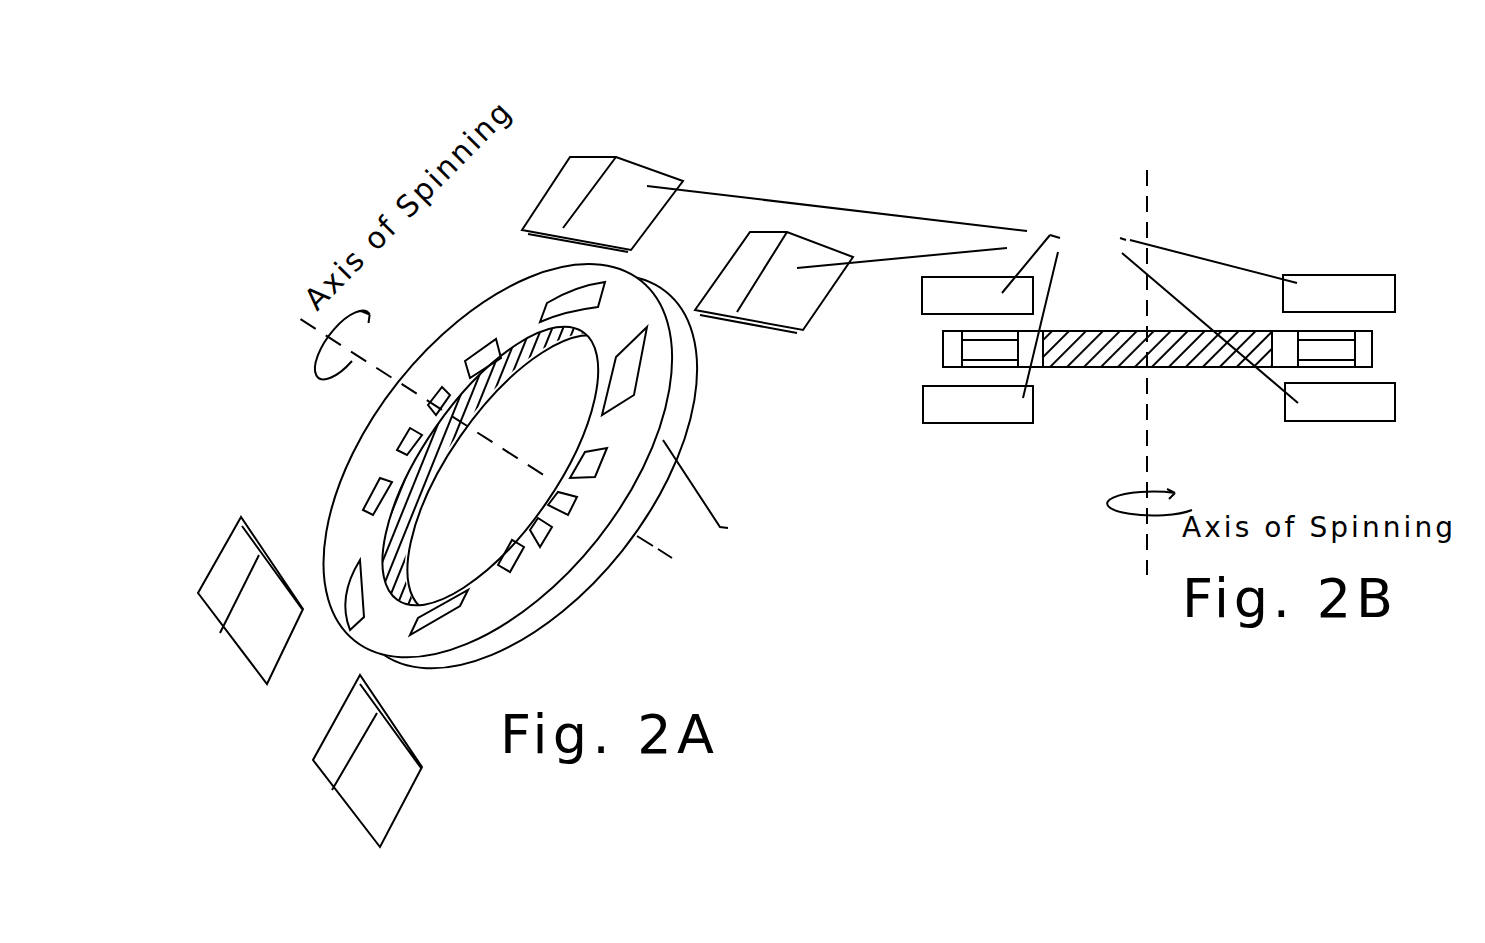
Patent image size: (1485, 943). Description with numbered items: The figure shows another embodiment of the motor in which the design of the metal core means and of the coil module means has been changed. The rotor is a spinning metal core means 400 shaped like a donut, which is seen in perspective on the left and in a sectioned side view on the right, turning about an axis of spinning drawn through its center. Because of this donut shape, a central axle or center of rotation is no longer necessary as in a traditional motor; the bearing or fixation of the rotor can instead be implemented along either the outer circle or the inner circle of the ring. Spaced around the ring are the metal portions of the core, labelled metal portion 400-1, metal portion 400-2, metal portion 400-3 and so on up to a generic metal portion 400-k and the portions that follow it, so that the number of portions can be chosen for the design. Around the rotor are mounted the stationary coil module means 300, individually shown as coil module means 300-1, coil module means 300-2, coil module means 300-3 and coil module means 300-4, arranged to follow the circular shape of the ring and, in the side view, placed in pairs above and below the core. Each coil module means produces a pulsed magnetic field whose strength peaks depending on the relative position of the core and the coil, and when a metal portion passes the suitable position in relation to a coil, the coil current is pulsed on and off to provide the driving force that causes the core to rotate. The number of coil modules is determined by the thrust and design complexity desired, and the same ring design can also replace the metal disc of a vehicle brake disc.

In FIG. 2B, the coil module means 300 is at (1180, 284).
In FIG. 2A, the coil module means 300-1 is at (602, 204).
In FIG. 2B, the coil module means 300-1 is at (942, 302).
In FIG. 2A, the coil module means 300-2 is at (774, 282).
In FIG. 2B, the coil module means 300-2 is at (940, 403).
In FIG. 2A, the coil module means 300-3 is at (260, 623).
In FIG. 2B, the coil module means 300-3 is at (1395, 266).
In FIG. 2A, the coil module means 300-4 is at (375, 783).
In FIG. 2B, the coil module means 300-4 is at (1320, 413).
In FIG. 2B, the spinning metal core means 400 is at (1183, 371).
In FIG. 2A, the metal portion of the metal core means 400-1 is at (494, 353).
In FIG. 2A, the metal portion of the metal core means 400-2 is at (625, 275).
In FIG. 2A, the metal portion of the metal core means 400-3 is at (636, 377).
In FIG. 2A, the metal portion of the metal core means 400-k is at (485, 590).